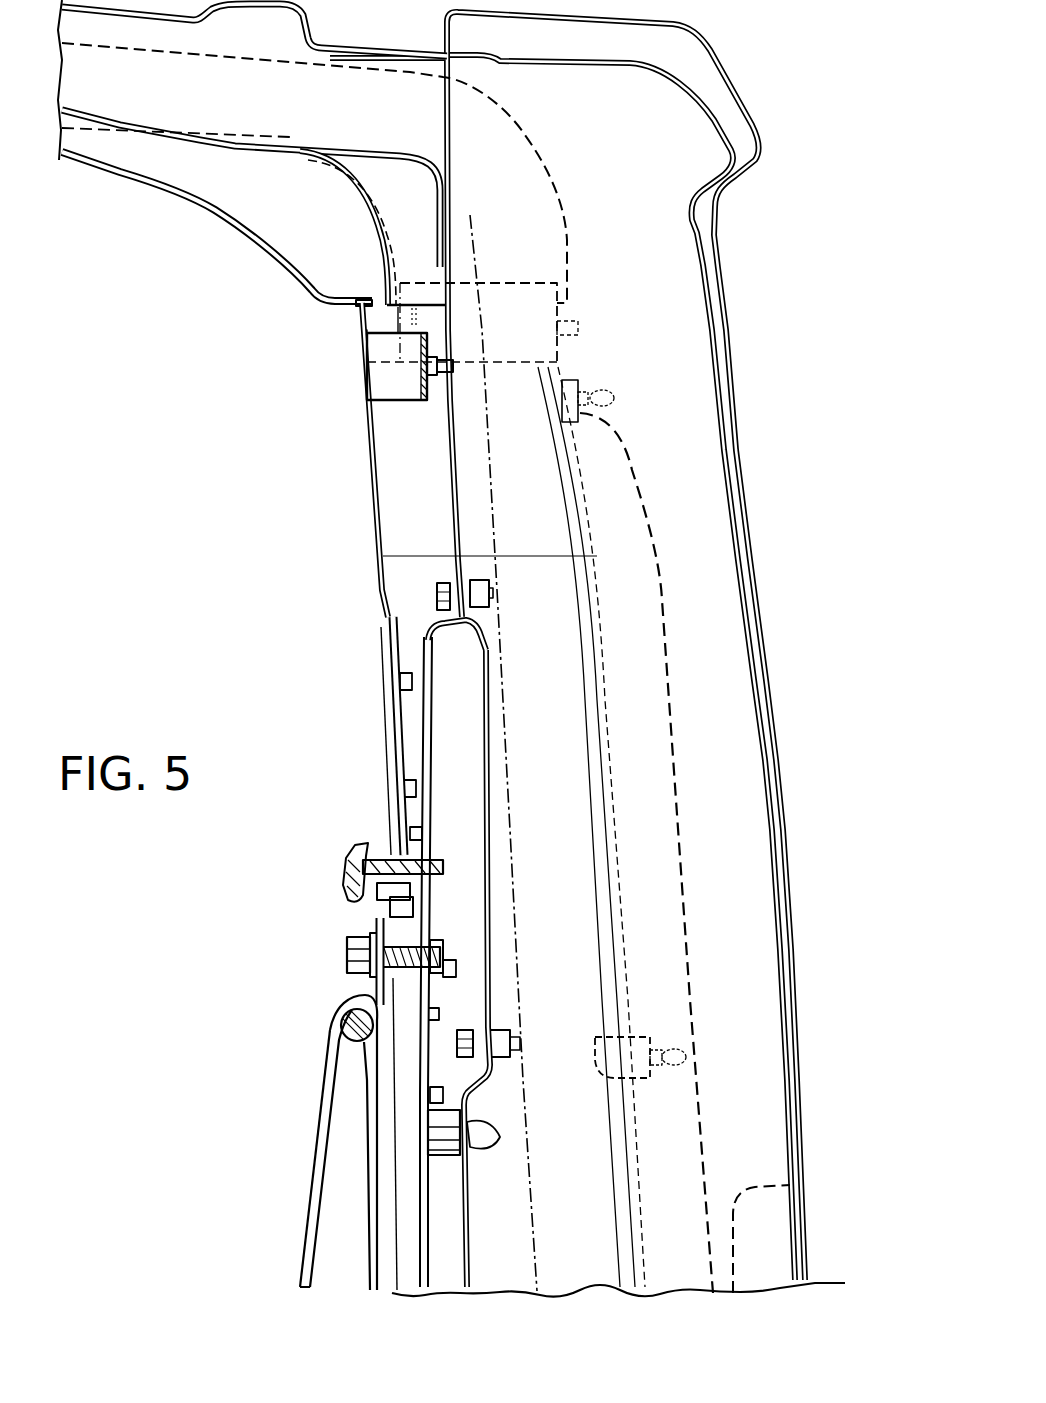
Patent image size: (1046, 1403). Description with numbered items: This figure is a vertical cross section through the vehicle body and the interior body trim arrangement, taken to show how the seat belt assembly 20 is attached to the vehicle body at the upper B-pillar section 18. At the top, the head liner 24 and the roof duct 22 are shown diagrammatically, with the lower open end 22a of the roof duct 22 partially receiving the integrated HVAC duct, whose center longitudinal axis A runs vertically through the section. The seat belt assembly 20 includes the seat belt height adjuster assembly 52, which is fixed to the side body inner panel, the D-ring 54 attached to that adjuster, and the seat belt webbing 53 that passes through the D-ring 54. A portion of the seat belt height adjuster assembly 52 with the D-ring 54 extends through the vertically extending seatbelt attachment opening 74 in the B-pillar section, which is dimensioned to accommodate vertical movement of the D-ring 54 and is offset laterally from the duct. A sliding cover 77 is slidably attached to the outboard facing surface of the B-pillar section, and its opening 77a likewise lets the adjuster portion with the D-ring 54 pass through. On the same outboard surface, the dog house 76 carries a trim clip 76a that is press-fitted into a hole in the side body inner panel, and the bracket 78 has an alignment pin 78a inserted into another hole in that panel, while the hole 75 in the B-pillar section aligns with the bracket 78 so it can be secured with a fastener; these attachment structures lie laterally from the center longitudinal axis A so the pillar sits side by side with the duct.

The upper B-pillar section 18 is at (354, 489).
The seat belt assembly 20 is at (329, 958).
The roof duct 22 is at (385, 252).
The lower open end 22a is at (362, 331).
The head liner 24 is at (194, 188).
The seat belt height adjuster assembly 52 is at (333, 864).
The seat belt webbing 53 is at (314, 1158).
The D-ring 54 is at (356, 1039).
The seatbelt attachment opening 74 is at (393, 628).
The hole 75 is at (366, 382).
The dog house 76 is at (441, 1157).
The trim clip 76a is at (470, 1124).
The sliding cover 77 is at (397, 722).
The opening 77a is at (398, 830).
The bracket 78 is at (393, 404).
The alignment pin 78a is at (453, 365).
The center longitudinal axis A is at (510, 832).